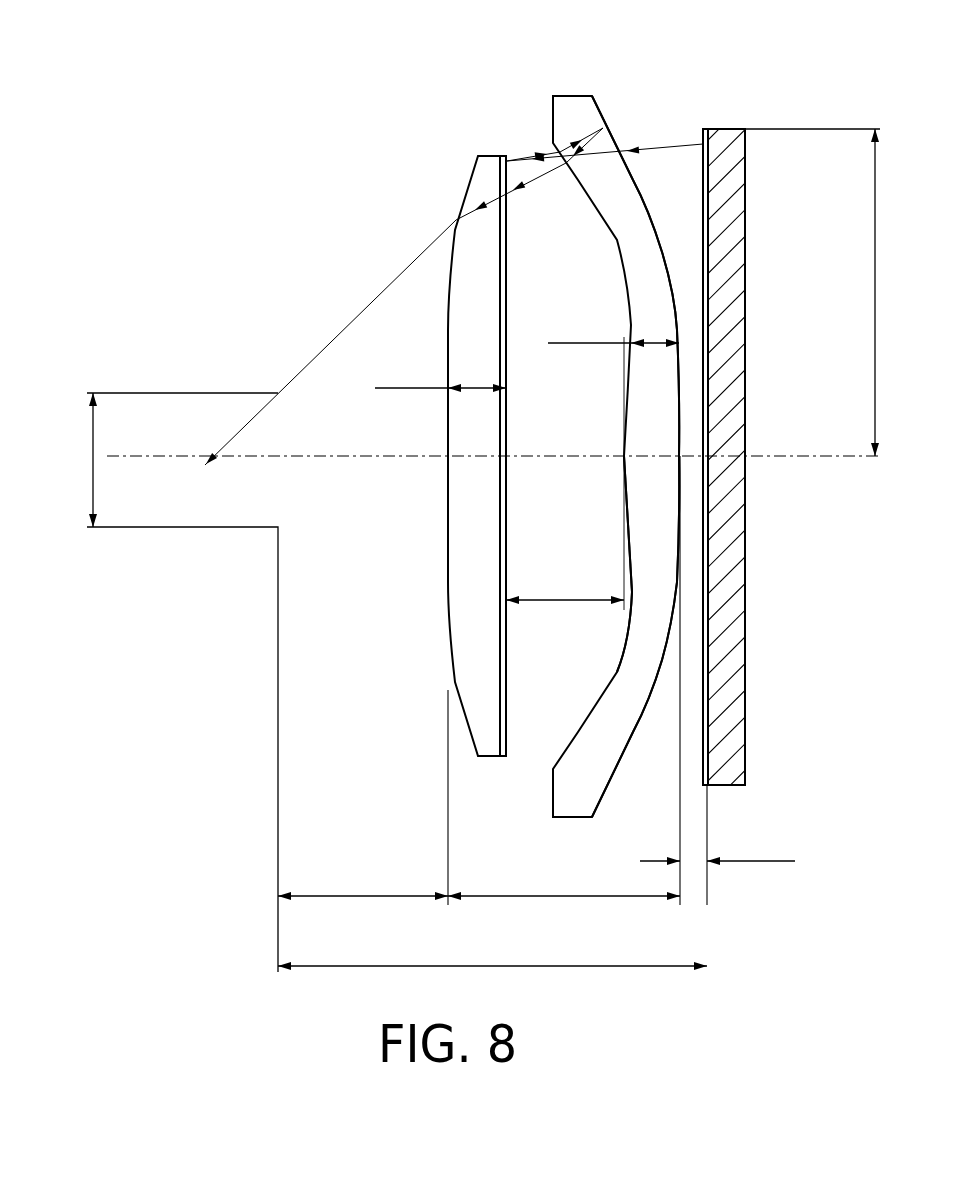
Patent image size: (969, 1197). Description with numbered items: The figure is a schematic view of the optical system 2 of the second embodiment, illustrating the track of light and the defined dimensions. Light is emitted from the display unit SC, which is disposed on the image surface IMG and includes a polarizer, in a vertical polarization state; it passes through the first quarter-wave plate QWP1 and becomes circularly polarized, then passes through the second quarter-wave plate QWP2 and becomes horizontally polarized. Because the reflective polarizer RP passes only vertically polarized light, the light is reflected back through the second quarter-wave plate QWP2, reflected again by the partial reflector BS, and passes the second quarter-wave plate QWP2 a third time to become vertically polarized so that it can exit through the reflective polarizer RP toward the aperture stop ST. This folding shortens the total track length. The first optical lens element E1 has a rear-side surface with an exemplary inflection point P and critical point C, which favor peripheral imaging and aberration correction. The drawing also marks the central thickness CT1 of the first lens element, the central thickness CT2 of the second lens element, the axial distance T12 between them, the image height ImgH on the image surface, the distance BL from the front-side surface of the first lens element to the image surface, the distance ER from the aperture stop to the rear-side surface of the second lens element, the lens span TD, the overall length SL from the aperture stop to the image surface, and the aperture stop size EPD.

The optical system 2 is at (218, 92).
The reflective polarizer RP is at (500, 174).
The second quarter-wave plate QWP2 is at (498, 155).
The first optical lens element E1 is at (578, 108).
The partial reflector BS is at (604, 122).
The inflection point P is at (627, 527).
The critical point C is at (633, 597).
The first quarter-wave plate QWP1 is at (703, 136).
The display unit SC is at (727, 128).
The image surface IMG is at (703, 733).
The aperture stop ST is at (276, 392).
The size of the aperture stop EPD is at (66, 460).
The central thickness of the second optical lens element CT2 is at (440, 375).
The central thickness of the first optical lens element CT1 is at (613, 330).
The axial distance between the rear-side surface of the first optical lens element a T12 is at (565, 473).
The image height ImgH is at (812, 292).
The axial distance between the front-side surface of the first optical lens element BL is at (718, 680).
The axial distance between the aperture stop and the rear-side surface of the second ER is at (363, 797).
The axial distance between the front-side surface of the first optical lens element TD is at (564, 883).
The axial distance between the aperture stop and the image surface SL is at (492, 953).